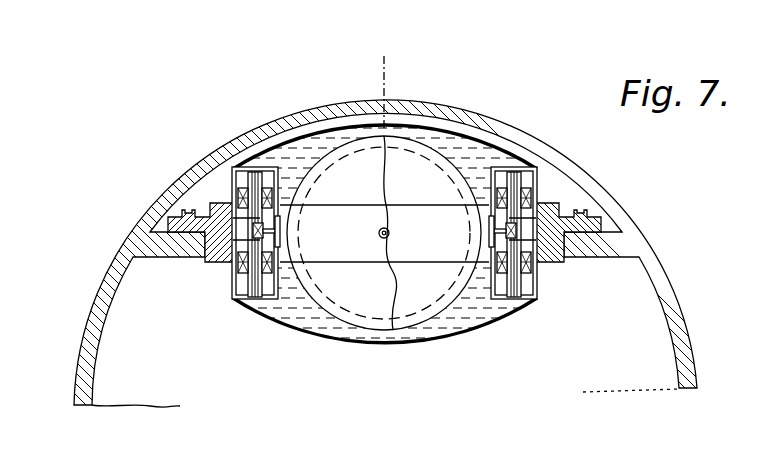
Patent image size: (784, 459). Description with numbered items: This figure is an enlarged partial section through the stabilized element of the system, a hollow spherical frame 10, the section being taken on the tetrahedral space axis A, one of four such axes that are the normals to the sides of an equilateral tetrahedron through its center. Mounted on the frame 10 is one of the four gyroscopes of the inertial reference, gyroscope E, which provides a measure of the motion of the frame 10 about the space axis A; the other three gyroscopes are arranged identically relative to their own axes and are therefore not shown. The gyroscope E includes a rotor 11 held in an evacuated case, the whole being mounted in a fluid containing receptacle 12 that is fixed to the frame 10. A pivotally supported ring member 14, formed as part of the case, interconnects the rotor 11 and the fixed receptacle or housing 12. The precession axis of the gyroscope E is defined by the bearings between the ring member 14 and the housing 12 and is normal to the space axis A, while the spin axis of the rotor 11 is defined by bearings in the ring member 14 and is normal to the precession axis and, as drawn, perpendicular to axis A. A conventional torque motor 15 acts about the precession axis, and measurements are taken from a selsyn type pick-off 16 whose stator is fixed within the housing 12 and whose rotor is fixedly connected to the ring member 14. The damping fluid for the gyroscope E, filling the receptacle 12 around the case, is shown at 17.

The hollow spherical frame 10 is at (96, 290).
The rotor 11 is at (432, 312).
The fluid containing receptacle 12 is at (503, 312).
The ring member 14 is at (344, 211).
The torque motor 15 is at (230, 190).
The selsyn type pick-off 16 is at (550, 184).
The damping fluid 17 is at (470, 148).
The gyroscope E is at (305, 339).
The tetrahedral space axis A is at (382, 81).